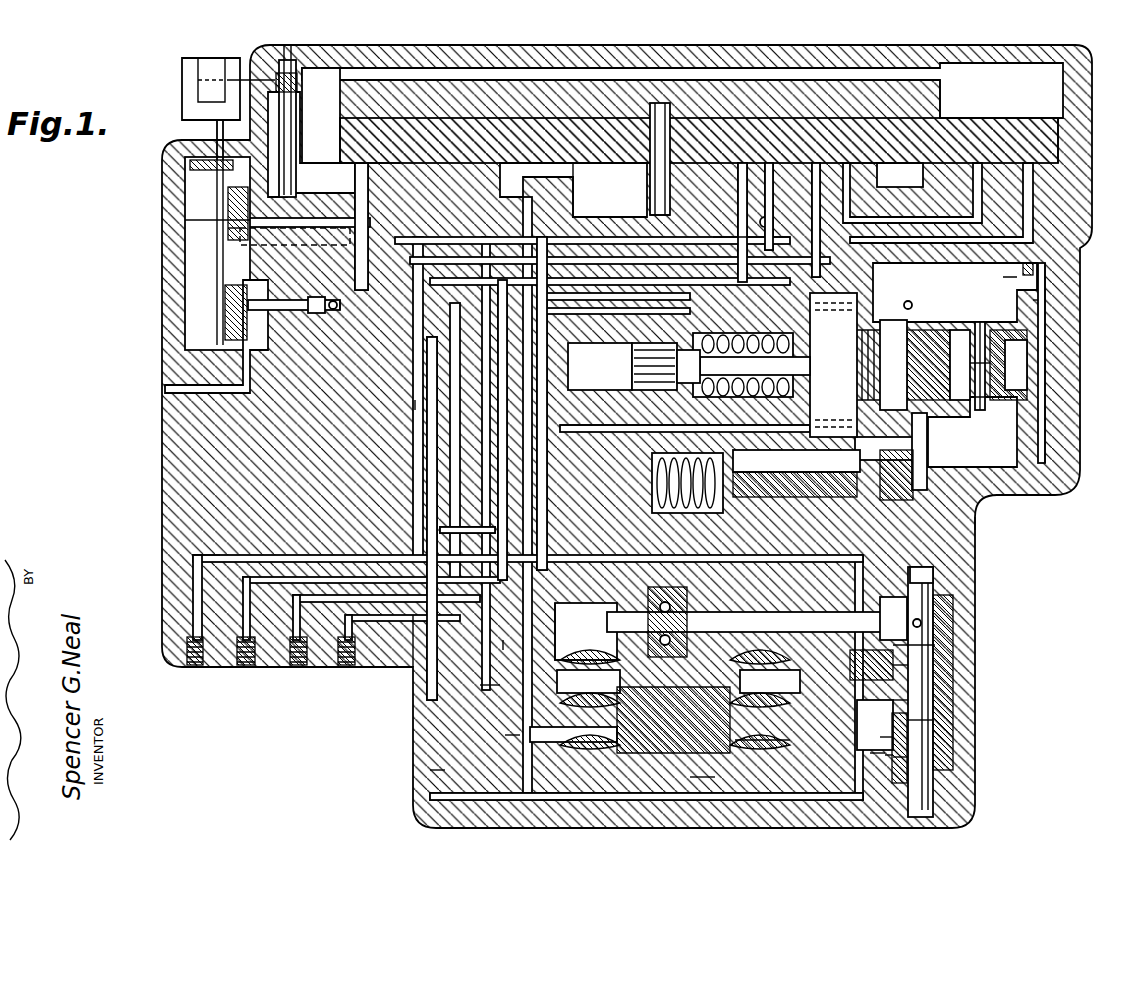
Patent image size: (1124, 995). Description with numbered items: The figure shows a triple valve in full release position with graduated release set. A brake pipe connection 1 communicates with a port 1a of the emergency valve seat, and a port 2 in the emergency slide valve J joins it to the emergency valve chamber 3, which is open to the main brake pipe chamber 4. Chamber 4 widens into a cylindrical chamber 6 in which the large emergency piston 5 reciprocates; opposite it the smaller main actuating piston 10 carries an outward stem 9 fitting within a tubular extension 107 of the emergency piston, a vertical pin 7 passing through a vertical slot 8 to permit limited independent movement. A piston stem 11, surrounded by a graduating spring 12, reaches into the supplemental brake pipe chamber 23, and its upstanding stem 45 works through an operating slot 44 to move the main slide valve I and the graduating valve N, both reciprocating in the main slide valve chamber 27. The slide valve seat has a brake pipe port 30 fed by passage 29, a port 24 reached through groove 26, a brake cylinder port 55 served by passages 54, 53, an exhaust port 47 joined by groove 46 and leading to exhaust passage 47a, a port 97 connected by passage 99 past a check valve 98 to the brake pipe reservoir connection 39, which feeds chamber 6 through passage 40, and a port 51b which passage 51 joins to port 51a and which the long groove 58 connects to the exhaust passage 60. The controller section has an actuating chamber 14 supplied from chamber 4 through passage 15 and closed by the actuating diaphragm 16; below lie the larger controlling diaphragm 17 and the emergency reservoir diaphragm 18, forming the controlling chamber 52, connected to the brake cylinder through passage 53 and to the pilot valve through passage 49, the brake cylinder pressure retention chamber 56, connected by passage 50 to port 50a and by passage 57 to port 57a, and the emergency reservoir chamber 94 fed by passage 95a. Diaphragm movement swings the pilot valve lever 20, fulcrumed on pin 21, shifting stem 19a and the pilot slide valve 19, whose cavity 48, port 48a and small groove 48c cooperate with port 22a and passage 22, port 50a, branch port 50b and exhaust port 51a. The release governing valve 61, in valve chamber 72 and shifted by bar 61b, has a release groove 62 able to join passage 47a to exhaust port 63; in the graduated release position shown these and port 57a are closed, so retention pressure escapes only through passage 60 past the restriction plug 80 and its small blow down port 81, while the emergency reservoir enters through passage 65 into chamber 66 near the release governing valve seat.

The brake pipe connection 1 is at (350, 668).
The port of the emergency valve seat 1a is at (705, 468).
The port 2 is at (760, 483).
The emergency valve chamber 3 is at (823, 450).
The main brake pipe chamber 4 is at (1003, 277).
The emergency piston 5 is at (1033, 300).
The cylindrical chamber 6 is at (1048, 317).
The vertical pin 7 is at (983, 407).
The vertical slot 8 is at (970, 363).
The stem 9 is at (925, 347).
The main actuating piston 10 is at (873, 300).
The piston stem 11 is at (787, 365).
The graduating spring 12 is at (733, 390).
The actuating chamber 14 is at (586, 631).
The passage 15 is at (911, 303).
The actuating diaphragm 16 is at (503, 643).
The controlling diaphragm 17 is at (510, 735).
The emergency reservoir diaphragm 18 is at (587, 800).
The pilot slide valve 19 is at (907, 740).
The stem 19a is at (920, 648).
The pilot valve lever 20 is at (764, 622).
The pin 21 is at (627, 622).
The passage 22 is at (543, 473).
The port 22a is at (893, 665).
The supplemental brake pipe chamber 23 is at (634, 366).
The port 24 is at (577, 170).
The groove 26 is at (610, 190).
The main slide valve chamber 27 is at (699, 118).
The passage 29 is at (490, 524).
The brake pipe port 30 is at (742, 167).
The brake pipe reservoir connection 39 is at (192, 665).
The passage 40 is at (643, 428).
The operating slot 44 is at (647, 130).
The post or stem 45 is at (650, 200).
The groove 46 is at (840, 177).
The exhaust port 47 is at (815, 167).
The brake cylinder release passage 47a is at (328, 298).
The groove or cavity 48 is at (907, 700).
The port 48a is at (890, 755).
The small groove 48c is at (885, 740).
The passage 49 is at (830, 680).
The passage 50 is at (762, 743).
The port 50a is at (877, 753).
The branch port 50b is at (900, 757).
The passage 51 is at (417, 815).
The port 51a is at (917, 720).
The port 51b is at (380, 165).
The controlling chamber 52 is at (480, 688).
The passage 53 is at (413, 620).
The passage 54 is at (503, 453).
The brake cylinder port 55 is at (860, 152).
The brake cylinder pressure retention chamber 56 is at (570, 814).
The passage 57 is at (353, 357).
The port 57a is at (193, 225).
The long groove 58 is at (357, 163).
The exhaust passage 60 is at (291, 53).
The release governing valve 61 is at (200, 310).
The manually reciprocable bar 61b is at (192, 193).
The release groove 62 is at (197, 267).
The exhaust port and passage 63 is at (163, 393).
The passage 65 is at (247, 665).
The chamber 66 is at (321, 315).
The valve chamber 72 is at (197, 235).
The restriction plug 80 is at (297, 80).
The blow down port 81 is at (240, 80).
The emergency reservoir chamber 94 is at (703, 777).
The passage 95a is at (440, 770).
The port 97 is at (757, 190).
The check valve 98 is at (769, 226).
The passage 99 is at (713, 243).
The tubular extension 107 is at (953, 333).
The main slide valve I is at (1027, 128).
The emergency slide valve J is at (862, 498).
The graduating valve N is at (937, 100).